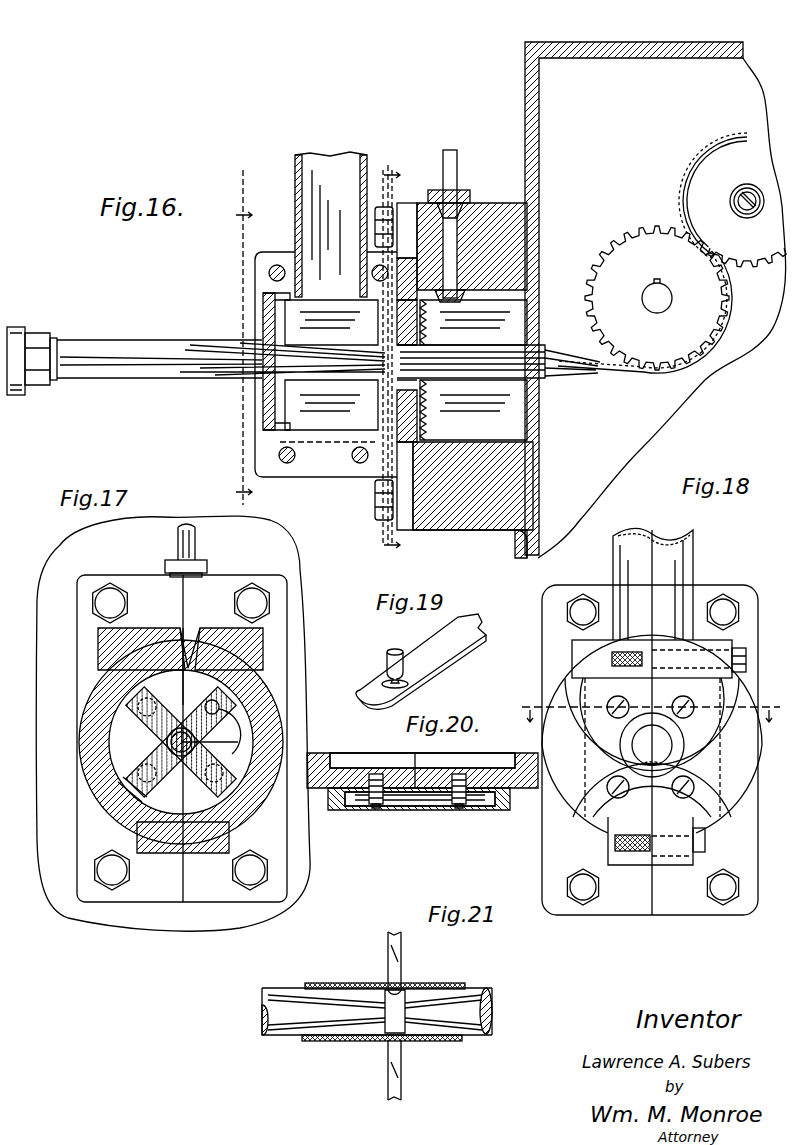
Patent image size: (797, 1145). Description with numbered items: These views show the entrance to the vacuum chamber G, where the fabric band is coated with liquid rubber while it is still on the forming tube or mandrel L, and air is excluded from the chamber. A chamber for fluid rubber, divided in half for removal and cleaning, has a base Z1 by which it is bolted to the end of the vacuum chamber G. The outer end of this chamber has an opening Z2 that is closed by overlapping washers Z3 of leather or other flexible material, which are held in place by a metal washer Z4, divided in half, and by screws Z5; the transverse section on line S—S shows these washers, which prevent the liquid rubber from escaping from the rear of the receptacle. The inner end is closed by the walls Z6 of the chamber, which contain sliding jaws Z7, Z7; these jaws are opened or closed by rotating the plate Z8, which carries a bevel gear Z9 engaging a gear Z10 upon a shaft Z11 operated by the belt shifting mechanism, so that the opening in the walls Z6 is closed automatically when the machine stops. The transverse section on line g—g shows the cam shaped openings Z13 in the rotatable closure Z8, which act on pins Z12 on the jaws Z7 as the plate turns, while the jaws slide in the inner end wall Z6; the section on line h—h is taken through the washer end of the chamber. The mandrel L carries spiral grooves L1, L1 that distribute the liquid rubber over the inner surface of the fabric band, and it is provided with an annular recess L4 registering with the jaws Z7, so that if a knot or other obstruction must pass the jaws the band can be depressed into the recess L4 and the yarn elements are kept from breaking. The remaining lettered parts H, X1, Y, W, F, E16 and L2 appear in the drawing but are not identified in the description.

In FIG. 16, the vacuum chamber G is at (634, 284).
In FIG. 16, the housing cover H is at (772, 72).
In FIG. 16, the toothed band X1 is at (604, 373).
In FIG. 16, the nut Y is at (30, 330).
In FIG. 16, the collar W is at (42, 388).
In FIG. 16, the mandrel L is at (156, 370).
In FIG. 17, the mandrel L is at (200, 876).
In FIG. 18, the mandrel L is at (690, 776).
In FIG. 21, the mandrel L is at (266, 1030).
In FIG. 16, the flexible shaft strands F is at (271, 382).
In FIG. 16, the section line h— h is at (244, 346).
In FIG. 16, the section line g— g is at (391, 345).
In FIG. 16, the tube E16 is at (314, 218).
In FIG. 18, the tube E16 is at (676, 584).
In FIG. 16, the opening Z2 is at (262, 434).
In FIG. 18, the opening Z2 is at (720, 600).
In FIG. 16, the metal washer Z4 is at (268, 298).
In FIG. 18, the metal washer Z4 is at (655, 770).
In FIG. 20, the metal washer Z4 is at (345, 806).
In FIG. 16, the overlapping washers Z3 is at (283, 332).
In FIG. 18, the overlapping washers Z3 is at (632, 765).
In FIG. 20, the overlapping washers Z3 is at (417, 776).
In FIG. 16, the base Z1 is at (408, 205).
In FIG. 17, the base Z1 is at (268, 608).
In FIG. 16, the bevel gear Z9 is at (425, 432).
In FIG. 17, the bevel gear Z9 is at (132, 778).
In FIG. 16, the plate Z8 is at (403, 470).
In FIG. 17, the plate Z8 is at (232, 668).
In FIG. 16, the gear Z10 is at (432, 294).
In FIG. 16, the shaft Z11 is at (463, 225).
In FIG. 17, the shaft Z11 is at (208, 555).
In FIG. 16, the cable tube L2 is at (538, 378).
In FIG. 16, the spiral grooves L1 is at (572, 382).
In FIG. 21, the spiral grooves L1 is at (288, 1000).
In FIG. 17, the inner end wall Z6 is at (140, 826).
In FIG. 17, the sliding jaws Z7 is at (115, 665).
In FIG. 19, the sliding jaws Z7 is at (472, 653).
In FIG. 21, the sliding jaws Z7 is at (404, 960).
In FIG. 17, the pins Z12 is at (218, 712).
In FIG. 19, the pins Z12 is at (393, 652).
In FIG. 17, the cam shaped openings Z13 is at (236, 727).
In FIG. 18, the screws Z5 is at (678, 700).
In FIG. 20, the screws Z5 is at (378, 806).
In FIG. 18, the section line s—s S is at (651, 706).
In FIG. 21, the annular recess L4 is at (444, 988).